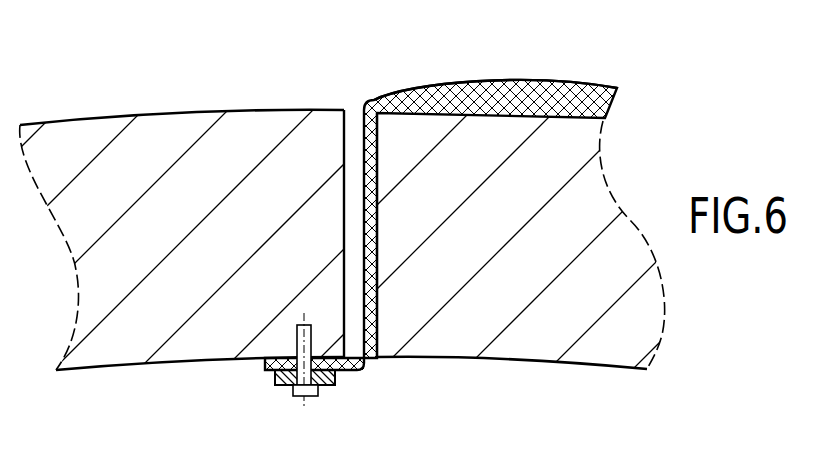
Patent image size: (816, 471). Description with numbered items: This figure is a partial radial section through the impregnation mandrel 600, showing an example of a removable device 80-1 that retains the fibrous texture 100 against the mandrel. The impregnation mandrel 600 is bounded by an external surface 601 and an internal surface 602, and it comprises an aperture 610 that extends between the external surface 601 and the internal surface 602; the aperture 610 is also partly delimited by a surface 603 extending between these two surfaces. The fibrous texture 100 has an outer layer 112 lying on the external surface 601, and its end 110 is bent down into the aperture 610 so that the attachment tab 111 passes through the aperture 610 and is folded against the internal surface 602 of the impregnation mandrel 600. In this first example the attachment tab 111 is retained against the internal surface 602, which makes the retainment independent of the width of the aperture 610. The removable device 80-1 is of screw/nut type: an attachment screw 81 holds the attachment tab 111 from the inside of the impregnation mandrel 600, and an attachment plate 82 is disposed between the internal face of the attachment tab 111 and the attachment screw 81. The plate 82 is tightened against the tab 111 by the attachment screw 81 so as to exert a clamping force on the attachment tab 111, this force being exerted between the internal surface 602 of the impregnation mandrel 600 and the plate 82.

The fibrous texture 100 is at (567, 92).
The end of the fibrous texture 110 is at (441, 216).
The attachment tab 111 is at (336, 370).
The outer layer of the fibrous texture 112 is at (418, 84).
The impregnation mandrel 600 is at (180, 229).
The external surface 601 is at (88, 124).
The internal surface 602 is at (117, 365).
The surface partly delimiting the aperture 603 is at (379, 218).
The aperture 610 is at (357, 111).
The removable device 80-1 is at (261, 369).
The attachment screw 81 is at (296, 332).
The attachment plate 82 is at (283, 385).